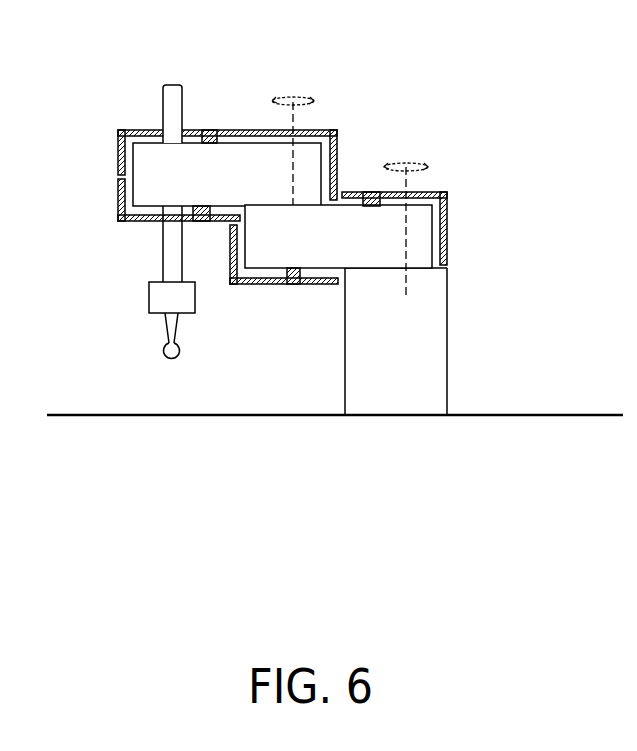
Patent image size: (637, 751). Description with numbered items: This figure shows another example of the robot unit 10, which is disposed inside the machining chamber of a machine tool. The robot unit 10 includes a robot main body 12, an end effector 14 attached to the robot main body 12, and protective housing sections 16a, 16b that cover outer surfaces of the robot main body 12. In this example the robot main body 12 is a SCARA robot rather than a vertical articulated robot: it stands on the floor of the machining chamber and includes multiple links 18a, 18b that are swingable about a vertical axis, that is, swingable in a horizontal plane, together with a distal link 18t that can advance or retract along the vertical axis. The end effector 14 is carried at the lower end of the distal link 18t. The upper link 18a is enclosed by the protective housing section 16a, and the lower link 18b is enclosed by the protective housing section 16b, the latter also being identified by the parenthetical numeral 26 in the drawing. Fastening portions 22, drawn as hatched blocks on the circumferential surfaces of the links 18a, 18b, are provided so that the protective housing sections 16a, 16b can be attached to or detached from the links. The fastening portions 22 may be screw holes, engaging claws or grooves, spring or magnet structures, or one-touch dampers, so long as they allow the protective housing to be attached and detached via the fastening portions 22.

The robot unit 10 is at (360, 85).
The robot main body 12 is at (468, 309).
The end effector 14 is at (150, 297).
The protective housing section 16a is at (142, 130).
The protective housing section 16b is at (362, 254).
The link 18a is at (238, 150).
The link 18b is at (425, 232).
The distal link 18t is at (163, 254).
The fastening portion 22 is at (296, 305).
The support member 26 is at (241, 346).